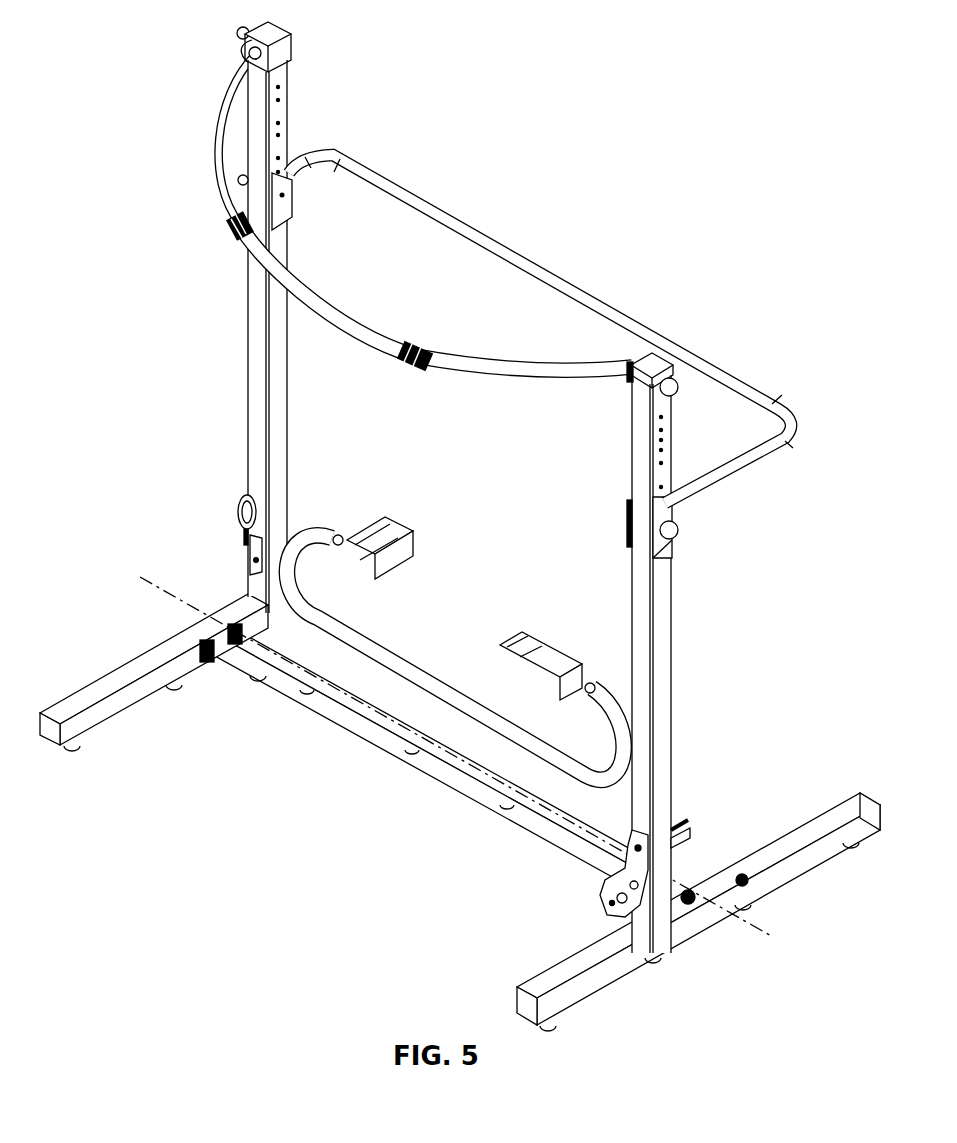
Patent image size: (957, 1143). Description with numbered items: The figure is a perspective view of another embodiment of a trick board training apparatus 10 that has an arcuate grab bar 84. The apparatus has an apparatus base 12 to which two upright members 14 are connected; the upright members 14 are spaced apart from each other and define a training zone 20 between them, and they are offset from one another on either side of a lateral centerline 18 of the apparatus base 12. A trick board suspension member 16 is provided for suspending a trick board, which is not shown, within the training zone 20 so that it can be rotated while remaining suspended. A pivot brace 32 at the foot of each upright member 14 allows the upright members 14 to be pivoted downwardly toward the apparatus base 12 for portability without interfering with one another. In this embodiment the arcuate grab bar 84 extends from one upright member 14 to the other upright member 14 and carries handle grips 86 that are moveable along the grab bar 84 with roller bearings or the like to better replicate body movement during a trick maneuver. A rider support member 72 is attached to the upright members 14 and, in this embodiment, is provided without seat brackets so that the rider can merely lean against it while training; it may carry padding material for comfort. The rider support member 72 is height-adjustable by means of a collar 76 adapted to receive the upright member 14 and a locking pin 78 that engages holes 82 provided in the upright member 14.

The trick board training apparatus 10 is at (683, 136).
The apparatus base 12 is at (123, 703).
The upright members 14 is at (255, 288).
The trick board suspension member 16 is at (410, 664).
The lateral centerline 18 is at (147, 588).
The training zone 20 is at (510, 414).
The pivot brace 32 is at (240, 512).
The rider support member 72 is at (748, 392).
The collar 76 is at (293, 207).
The locking pin 78 is at (680, 533).
The holes 82 is at (652, 412).
The arcuate grab bar 84 is at (221, 143).
The handle grips 86 is at (232, 221).